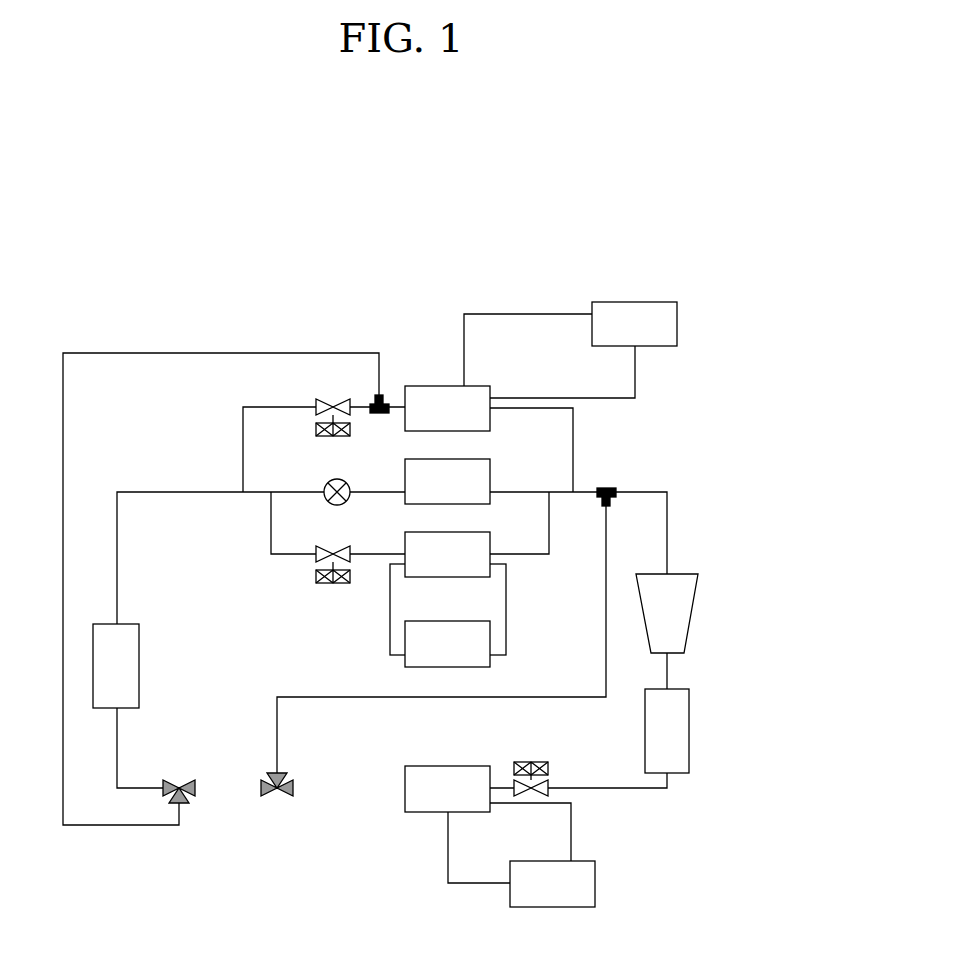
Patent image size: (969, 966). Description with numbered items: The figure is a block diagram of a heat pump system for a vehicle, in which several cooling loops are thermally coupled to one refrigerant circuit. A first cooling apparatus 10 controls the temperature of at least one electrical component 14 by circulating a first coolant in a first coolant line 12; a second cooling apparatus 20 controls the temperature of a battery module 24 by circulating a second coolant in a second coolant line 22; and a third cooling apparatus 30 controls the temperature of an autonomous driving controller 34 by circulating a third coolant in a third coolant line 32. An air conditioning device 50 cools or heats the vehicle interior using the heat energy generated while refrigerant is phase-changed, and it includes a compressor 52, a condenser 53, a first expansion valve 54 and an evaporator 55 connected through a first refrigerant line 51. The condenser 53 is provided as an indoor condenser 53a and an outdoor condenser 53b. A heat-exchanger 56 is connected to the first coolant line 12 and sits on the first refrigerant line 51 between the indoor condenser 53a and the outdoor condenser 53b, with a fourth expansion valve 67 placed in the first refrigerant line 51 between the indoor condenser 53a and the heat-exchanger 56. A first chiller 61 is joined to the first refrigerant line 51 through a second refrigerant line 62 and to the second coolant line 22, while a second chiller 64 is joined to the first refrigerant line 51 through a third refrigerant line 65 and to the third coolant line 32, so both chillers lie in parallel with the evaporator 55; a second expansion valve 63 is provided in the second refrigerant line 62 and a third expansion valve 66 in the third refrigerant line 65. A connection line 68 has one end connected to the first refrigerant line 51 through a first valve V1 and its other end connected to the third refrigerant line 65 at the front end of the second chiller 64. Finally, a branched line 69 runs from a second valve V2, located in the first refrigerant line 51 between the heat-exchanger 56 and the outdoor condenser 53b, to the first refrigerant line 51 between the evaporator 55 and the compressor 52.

The first cooling apparatus 10 is at (432, 871).
The first coolant line 12 is at (478, 883).
The electrical component 14 is at (595, 882).
The second cooling apparatus 20 is at (378, 637).
The second coolant line 22 is at (390, 608).
The battery module 24 is at (490, 660).
The third cooling apparatus 30 is at (541, 300).
The third coolant line 32 is at (494, 314).
The autonomous driving controller 34 is at (635, 302).
The air conditioning device 50 is at (676, 495).
The first refrigerant line 51 is at (117, 537).
The compressor 52 is at (698, 612).
The condenser 53 is at (737, 185).
The indoor condenser 53a is at (689, 730).
The outdoor condenser 53b is at (139, 665).
The first expansion valve 54 is at (348, 500).
The evaporator 55 is at (490, 471).
The heat-exchanger 56 is at (448, 766).
The first chiller 61 is at (490, 541).
The second refrigerant line 62 is at (271, 540).
The second expansion valve 63 is at (316, 581).
The second chiller 64 is at (426, 386).
The third refrigerant line 65 is at (243, 440).
The third expansion valve 66 is at (316, 430).
The fourth expansion valve 67 is at (540, 762).
The connection line 68 is at (170, 353).
The branched line 69 is at (277, 719).
The first valve V1 is at (185, 795).
The second valve V2 is at (280, 796).